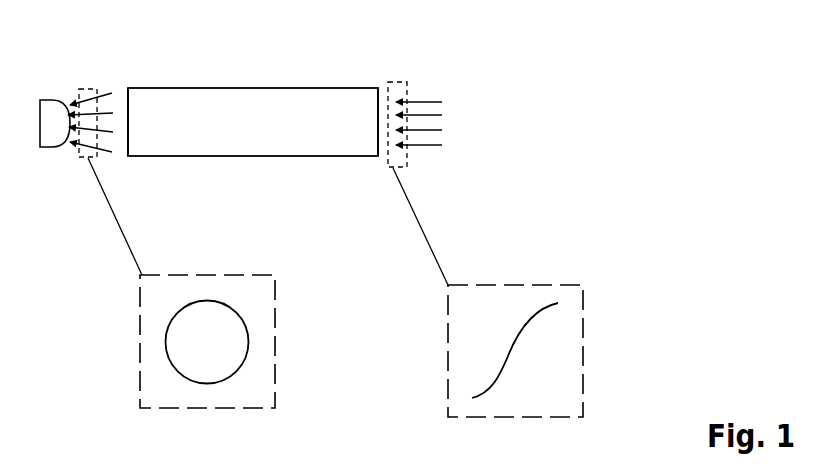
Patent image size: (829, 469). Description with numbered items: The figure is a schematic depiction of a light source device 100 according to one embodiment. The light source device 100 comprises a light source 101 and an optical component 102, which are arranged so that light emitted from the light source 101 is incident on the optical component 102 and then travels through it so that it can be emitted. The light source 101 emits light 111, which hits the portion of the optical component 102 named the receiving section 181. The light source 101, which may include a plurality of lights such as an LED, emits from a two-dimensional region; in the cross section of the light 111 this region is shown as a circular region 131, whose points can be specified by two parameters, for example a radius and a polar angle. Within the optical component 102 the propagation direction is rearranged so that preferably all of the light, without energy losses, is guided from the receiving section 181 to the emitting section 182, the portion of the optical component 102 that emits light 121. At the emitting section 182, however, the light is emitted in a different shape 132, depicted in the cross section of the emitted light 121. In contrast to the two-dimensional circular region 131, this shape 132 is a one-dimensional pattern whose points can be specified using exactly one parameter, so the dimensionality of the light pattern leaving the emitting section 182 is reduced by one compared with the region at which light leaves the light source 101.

The light source device 100 is at (531, 62).
The light source 101 is at (57, 100).
The optical component 102 is at (302, 88).
The light emitted by the light source 111 is at (92, 88).
The light emitted by the optical component 121 is at (423, 88).
The circular region 131 is at (243, 362).
The shape of emitted light 132 is at (513, 362).
The receiving section 181 is at (125, 157).
The emitting section 182 is at (383, 158).